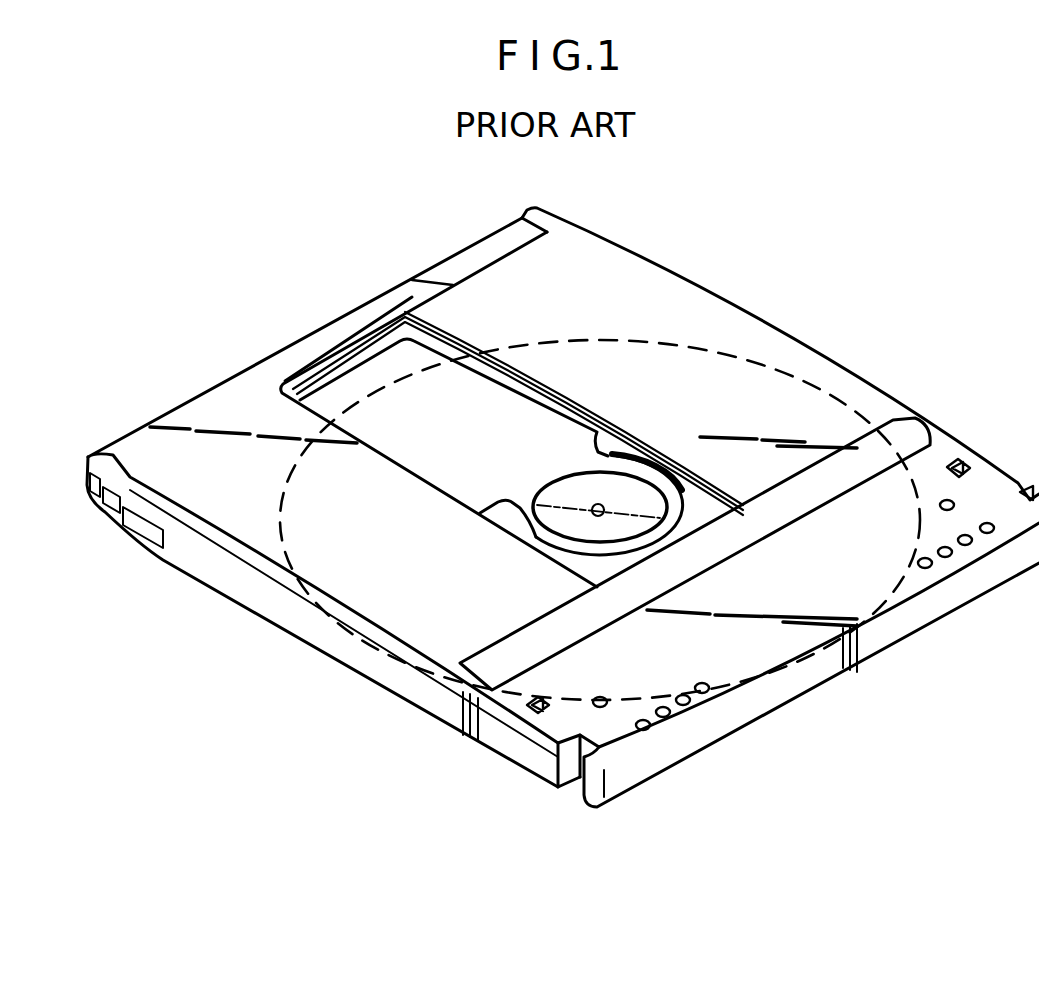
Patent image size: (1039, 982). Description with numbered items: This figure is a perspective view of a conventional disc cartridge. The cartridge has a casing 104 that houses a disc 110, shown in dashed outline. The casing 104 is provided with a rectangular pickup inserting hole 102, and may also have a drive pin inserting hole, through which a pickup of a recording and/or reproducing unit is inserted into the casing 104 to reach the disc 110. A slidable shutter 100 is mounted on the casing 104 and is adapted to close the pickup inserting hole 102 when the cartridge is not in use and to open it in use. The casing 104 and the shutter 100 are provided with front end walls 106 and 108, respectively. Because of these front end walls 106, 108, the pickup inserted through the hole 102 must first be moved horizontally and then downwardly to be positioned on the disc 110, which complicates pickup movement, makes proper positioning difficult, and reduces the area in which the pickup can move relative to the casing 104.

The slidable shutter 100 is at (421, 508).
The pickup inserting hole 102 is at (496, 382).
The casing 104 is at (690, 303).
The front end wall 106 is at (364, 349).
The front end wall 108 is at (336, 325).
The disc 110 is at (788, 372).